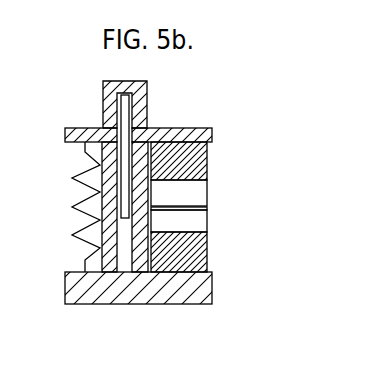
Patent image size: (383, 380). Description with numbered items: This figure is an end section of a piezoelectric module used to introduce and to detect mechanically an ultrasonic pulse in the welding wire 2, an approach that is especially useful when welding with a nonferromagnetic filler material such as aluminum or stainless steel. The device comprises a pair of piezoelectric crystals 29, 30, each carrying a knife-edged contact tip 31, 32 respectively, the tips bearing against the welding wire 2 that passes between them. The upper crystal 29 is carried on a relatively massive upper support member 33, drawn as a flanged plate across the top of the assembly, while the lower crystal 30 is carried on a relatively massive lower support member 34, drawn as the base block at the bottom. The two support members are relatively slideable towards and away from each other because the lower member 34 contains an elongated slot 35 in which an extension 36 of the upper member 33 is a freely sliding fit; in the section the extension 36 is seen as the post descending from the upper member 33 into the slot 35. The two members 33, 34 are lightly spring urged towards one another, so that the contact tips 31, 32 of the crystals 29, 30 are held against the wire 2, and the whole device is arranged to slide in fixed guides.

The welding wire 2 is at (177, 208).
The upper piezoelectric crystal 29 is at (193, 162).
The lower piezoelectric crystal 30 is at (193, 254).
The knife-edged contact tip 31 is at (192, 195).
The knife-edged contact tip 32 is at (180, 227).
The upper support member 33 is at (163, 128).
The lower support member 34 is at (77, 285).
The elongated slot 35 is at (125, 232).
The extension 36 is at (118, 180).